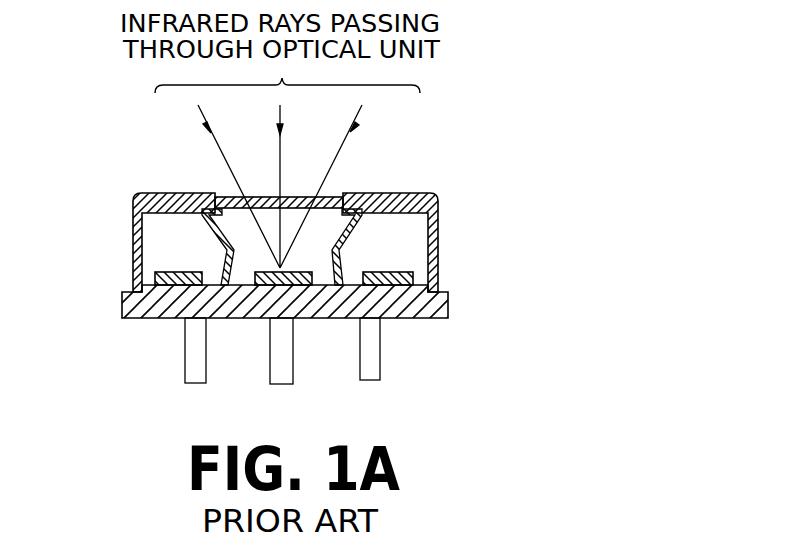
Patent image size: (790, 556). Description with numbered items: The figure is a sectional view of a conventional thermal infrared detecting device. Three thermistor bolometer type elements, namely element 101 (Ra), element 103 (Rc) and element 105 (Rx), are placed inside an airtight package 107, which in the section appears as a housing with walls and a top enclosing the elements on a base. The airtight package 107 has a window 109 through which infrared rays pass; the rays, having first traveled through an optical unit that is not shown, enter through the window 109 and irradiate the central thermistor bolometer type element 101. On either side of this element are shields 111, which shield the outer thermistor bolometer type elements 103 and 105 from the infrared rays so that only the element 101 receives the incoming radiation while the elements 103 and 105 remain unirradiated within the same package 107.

The thermistor bolometer type element (Ra) 101 is at (308, 275).
The thermistor bolometer type element (Rc) 103 is at (165, 283).
The thermistor bolometer type element (Rx) 105 is at (392, 270).
The airtight package 107 is at (135, 242).
The window 109 is at (305, 197).
The shields 111 is at (210, 238).